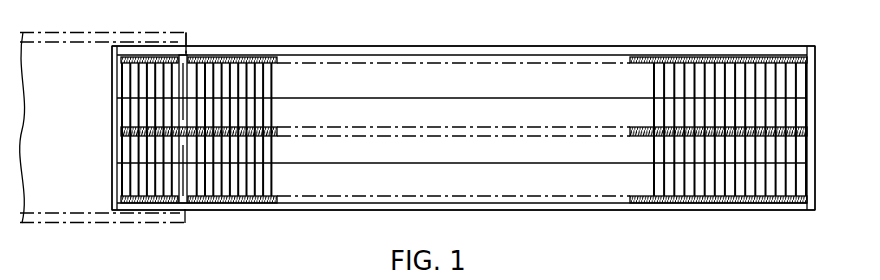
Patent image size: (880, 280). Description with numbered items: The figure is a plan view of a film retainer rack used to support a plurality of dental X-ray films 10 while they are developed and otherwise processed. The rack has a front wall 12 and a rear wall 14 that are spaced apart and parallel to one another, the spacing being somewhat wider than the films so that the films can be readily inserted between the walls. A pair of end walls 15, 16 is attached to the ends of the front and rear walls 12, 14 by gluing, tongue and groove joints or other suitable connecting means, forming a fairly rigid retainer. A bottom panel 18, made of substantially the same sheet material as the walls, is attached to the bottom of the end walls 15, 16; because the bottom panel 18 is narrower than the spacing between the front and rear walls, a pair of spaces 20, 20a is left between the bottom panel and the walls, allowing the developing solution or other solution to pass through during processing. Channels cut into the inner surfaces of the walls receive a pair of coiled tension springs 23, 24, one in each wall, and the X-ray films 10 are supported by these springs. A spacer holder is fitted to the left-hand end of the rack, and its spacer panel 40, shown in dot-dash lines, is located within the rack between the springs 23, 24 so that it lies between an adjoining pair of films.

The dental X-ray films 10 is at (265, 155).
The front wall 12 is at (520, 208).
The rear wall 14 is at (524, 50).
The end wall 15 is at (111, 147).
The end wall 16 is at (810, 209).
The bottom panel 18 is at (470, 98).
The space 20 is at (620, 178).
The space 20a is at (402, 82).
The coiled tension spring 23 is at (278, 191).
The coiled tension spring 24 is at (274, 66).
The spacer panel 40 is at (182, 192).